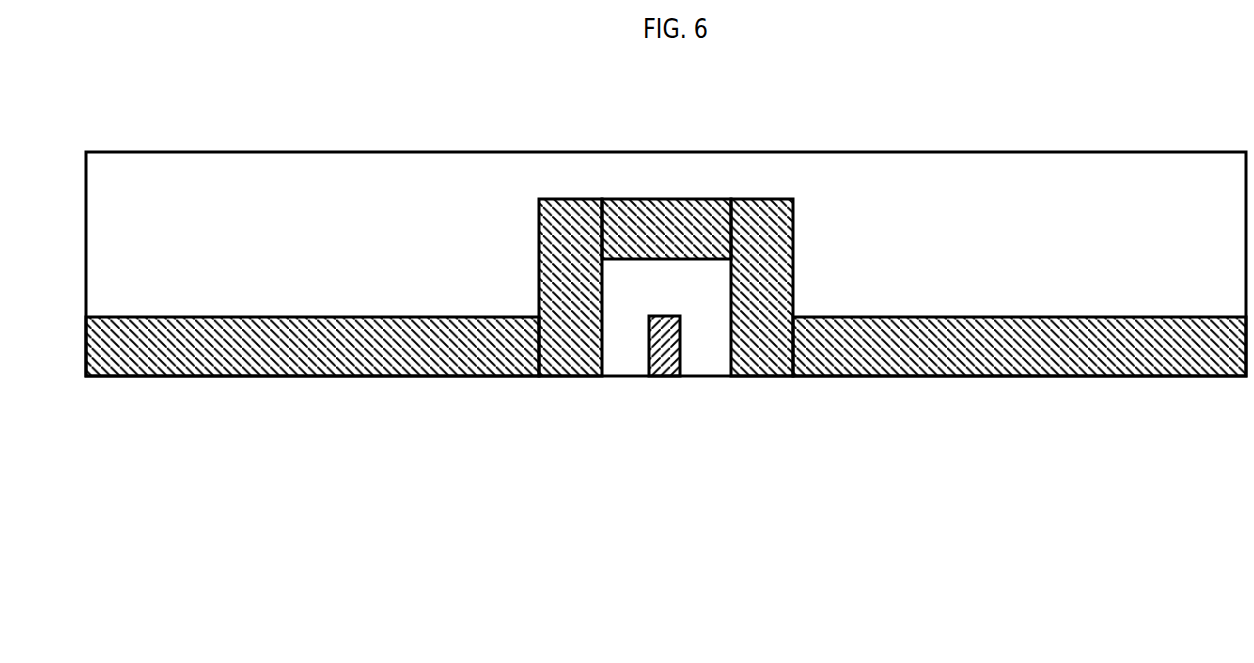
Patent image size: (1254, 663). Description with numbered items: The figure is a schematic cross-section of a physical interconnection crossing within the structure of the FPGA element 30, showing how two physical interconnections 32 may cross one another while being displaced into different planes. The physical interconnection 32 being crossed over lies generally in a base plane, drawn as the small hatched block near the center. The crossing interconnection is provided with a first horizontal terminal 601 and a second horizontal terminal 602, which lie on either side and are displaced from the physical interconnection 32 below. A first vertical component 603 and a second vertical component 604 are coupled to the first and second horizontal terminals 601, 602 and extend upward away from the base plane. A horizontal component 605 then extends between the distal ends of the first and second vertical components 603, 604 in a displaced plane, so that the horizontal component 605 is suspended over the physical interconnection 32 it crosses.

The FPGA element 30 is at (145, 152).
The physical interconnection 32 is at (658, 343).
The first horizontal terminal 601 is at (555, 350).
The second horizontal terminal 602 is at (768, 343).
The first vertical component 603 is at (562, 232).
The second vertical component 604 is at (785, 225).
The horizontal component 605 is at (645, 217).